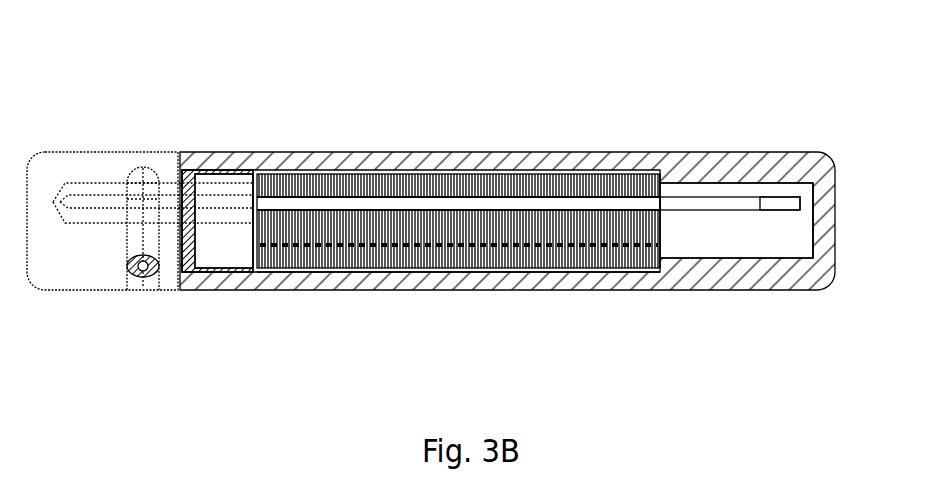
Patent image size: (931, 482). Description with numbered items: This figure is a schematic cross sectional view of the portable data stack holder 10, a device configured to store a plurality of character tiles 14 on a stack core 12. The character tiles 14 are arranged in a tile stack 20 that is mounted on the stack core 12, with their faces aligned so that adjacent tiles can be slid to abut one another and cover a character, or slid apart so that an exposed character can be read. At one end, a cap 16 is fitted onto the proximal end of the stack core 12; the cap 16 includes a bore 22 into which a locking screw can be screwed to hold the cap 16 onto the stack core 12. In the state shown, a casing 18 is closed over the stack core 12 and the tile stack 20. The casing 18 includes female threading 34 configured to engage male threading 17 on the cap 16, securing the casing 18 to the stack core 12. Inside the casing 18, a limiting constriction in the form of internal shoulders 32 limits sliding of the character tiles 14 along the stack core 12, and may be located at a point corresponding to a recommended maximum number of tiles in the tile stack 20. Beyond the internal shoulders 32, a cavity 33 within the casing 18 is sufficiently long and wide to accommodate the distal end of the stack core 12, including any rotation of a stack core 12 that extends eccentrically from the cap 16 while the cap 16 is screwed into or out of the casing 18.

The portable data stack holder 10 is at (188, 83).
The stack core 12 is at (717, 198).
The character tiles 14 is at (415, 262).
The cap 16 is at (108, 157).
The male threading 17 is at (225, 272).
The casing 18 is at (752, 290).
The tile stack 20 is at (525, 313).
The bore 22 is at (143, 271).
The internal shoulders 32 is at (655, 180).
The cavity 33 is at (745, 248).
The female threading 34 is at (237, 172).